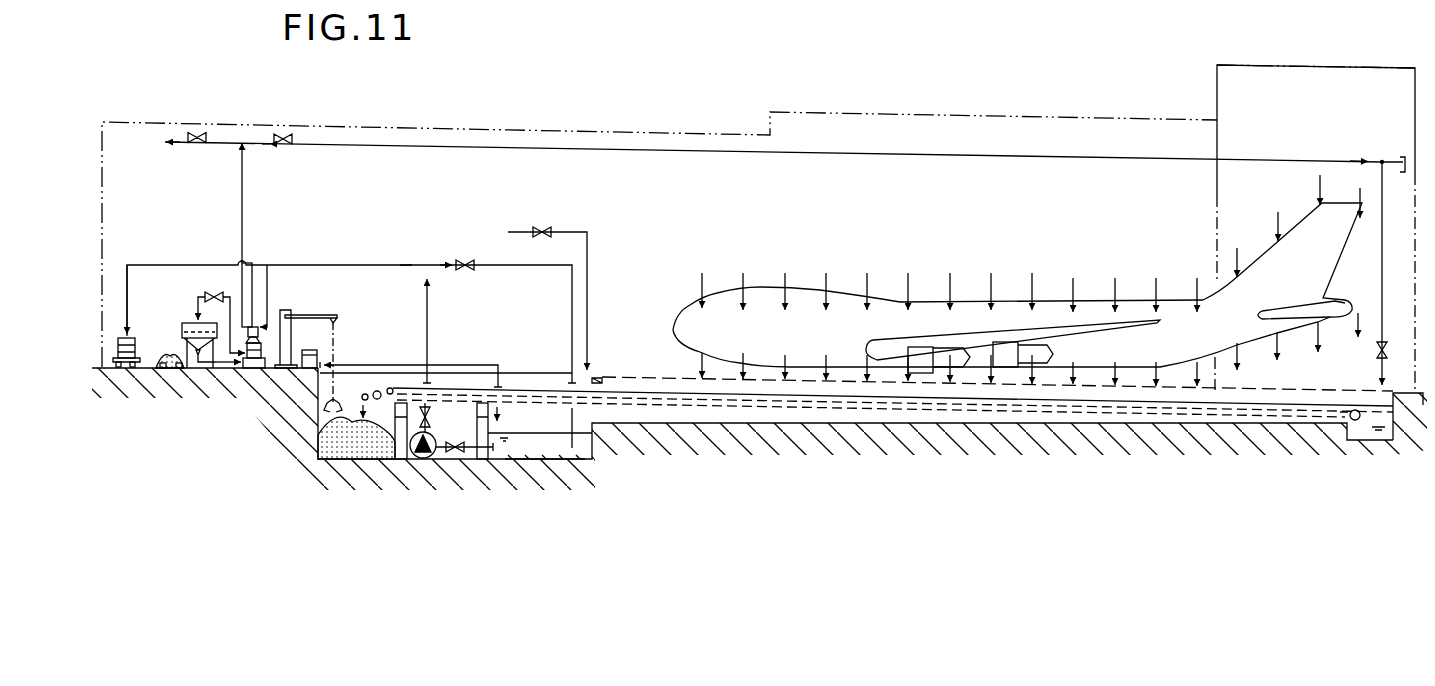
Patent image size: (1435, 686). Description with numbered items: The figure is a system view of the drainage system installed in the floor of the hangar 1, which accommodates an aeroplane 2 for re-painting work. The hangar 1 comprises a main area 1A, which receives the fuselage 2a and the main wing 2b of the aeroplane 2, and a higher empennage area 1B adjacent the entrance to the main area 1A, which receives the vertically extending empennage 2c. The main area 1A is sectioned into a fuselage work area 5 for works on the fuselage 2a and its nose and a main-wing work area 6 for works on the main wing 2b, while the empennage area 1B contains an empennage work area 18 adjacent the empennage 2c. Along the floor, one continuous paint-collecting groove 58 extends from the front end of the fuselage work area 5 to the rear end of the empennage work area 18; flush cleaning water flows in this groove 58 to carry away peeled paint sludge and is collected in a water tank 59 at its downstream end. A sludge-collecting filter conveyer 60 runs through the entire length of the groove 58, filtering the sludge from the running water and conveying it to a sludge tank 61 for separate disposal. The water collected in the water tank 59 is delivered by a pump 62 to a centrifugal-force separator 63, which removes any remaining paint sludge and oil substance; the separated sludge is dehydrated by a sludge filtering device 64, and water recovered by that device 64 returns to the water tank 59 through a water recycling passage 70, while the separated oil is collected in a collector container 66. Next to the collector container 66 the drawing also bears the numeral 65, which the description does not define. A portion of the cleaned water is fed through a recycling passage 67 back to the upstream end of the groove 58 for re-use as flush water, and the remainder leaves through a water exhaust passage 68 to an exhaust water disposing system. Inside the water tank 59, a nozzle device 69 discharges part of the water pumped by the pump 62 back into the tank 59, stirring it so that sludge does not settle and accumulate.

The hangar 1 is at (758, 220).
The main area 1A is at (610, 132).
The empennage area 1B is at (1217, 92).
The aeroplane 2 is at (1025, 288).
The fuselage 2a is at (1055, 300).
The main wing 2b is at (1122, 335).
The empennage 2c is at (1345, 298).
The fuselage work area 5 is at (952, 194).
The main-wing work area 6 is at (1030, 349).
The empennage work area 18 is at (1338, 134).
The paint-collecting groove 58 is at (741, 422).
The water tank 59 is at (593, 457).
The sludge-collecting filter conveyer 60 is at (647, 393).
The sludge tank 61 is at (318, 440).
The pump 62 is at (437, 442).
The centrifugal-force separator 63 is at (245, 368).
The sludge filtering device 64 is at (197, 322).
The abrasive material 65 is at (155, 356).
The collector container 66 is at (133, 337).
The recycling passage 67 is at (390, 147).
The water exhaust passage 68 is at (178, 146).
The nozzle device 69 is at (540, 443).
The water recycling passage 70 is at (358, 358).